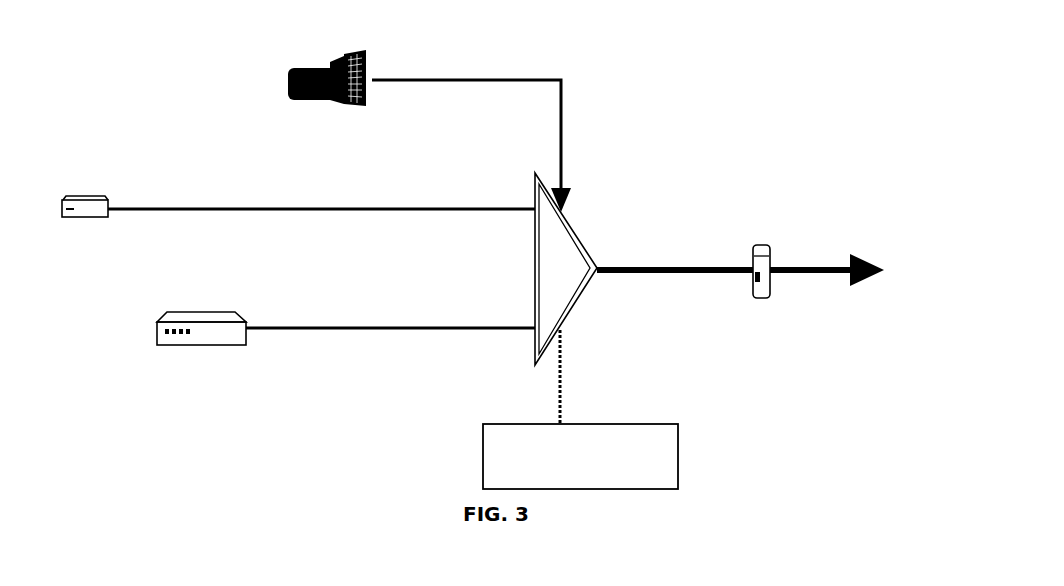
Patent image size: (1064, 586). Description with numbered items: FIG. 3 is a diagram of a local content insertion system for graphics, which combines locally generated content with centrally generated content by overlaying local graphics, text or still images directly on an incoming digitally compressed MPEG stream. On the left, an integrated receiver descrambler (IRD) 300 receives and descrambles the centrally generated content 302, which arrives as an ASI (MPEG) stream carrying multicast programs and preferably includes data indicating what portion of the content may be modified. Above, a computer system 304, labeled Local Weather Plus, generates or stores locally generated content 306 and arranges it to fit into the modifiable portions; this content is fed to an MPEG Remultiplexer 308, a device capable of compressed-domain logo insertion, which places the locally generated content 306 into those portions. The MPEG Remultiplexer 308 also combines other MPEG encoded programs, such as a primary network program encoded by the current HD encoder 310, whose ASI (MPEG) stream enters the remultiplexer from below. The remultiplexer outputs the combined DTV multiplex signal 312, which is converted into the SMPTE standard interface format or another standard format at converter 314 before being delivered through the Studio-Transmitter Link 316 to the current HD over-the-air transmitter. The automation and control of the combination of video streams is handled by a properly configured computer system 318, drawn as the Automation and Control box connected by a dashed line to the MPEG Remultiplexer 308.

The integrated receiver descrambler 300 is at (70, 223).
The centrally generated content 302 is at (140, 195).
The computer system 304 is at (370, 53).
The locally generated content 306 is at (482, 75).
The MPEG Remultiplexer 308 is at (570, 211).
The encoder 310 is at (230, 350).
The DTV multiplex signal 312 is at (653, 265).
The SMPTE 310 converter 314 is at (768, 245).
The Studio-Transmitter Link 316 is at (890, 245).
The computer system for automation and control 318 is at (678, 453).